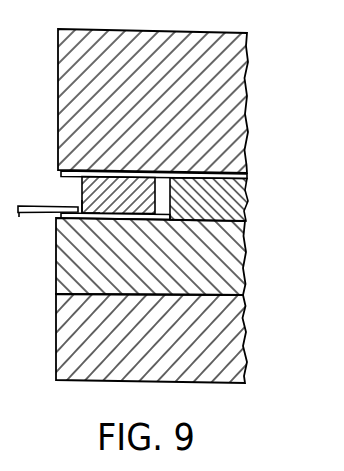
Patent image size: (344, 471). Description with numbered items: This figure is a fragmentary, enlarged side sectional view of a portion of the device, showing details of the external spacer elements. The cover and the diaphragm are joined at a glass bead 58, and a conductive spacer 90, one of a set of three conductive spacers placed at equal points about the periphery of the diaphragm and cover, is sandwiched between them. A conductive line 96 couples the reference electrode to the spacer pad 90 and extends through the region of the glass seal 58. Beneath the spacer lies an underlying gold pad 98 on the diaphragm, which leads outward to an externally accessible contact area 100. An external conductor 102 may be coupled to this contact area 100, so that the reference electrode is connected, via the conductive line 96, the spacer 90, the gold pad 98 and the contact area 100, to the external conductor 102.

The glass bead 58 is at (243, 215).
The conductive spacer 90 is at (82, 180).
The conductive line 96 is at (212, 172).
The gold pad 98 is at (100, 218).
The contact area 100 is at (82, 212).
The external conductor 102 is at (25, 214).